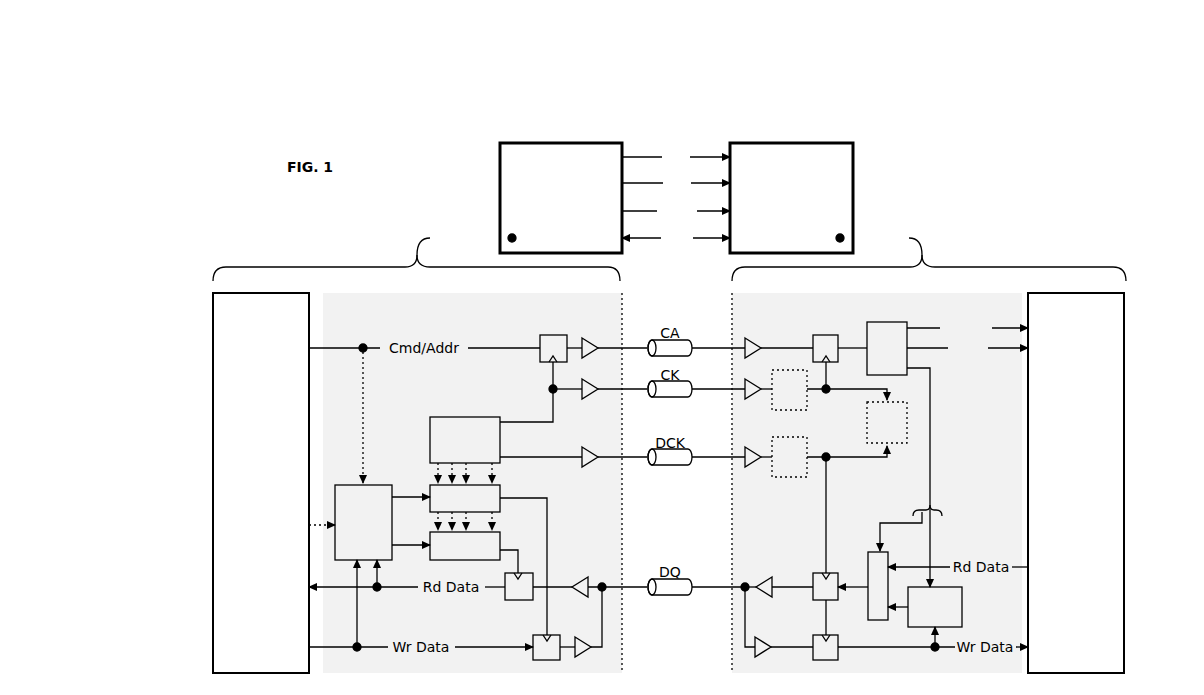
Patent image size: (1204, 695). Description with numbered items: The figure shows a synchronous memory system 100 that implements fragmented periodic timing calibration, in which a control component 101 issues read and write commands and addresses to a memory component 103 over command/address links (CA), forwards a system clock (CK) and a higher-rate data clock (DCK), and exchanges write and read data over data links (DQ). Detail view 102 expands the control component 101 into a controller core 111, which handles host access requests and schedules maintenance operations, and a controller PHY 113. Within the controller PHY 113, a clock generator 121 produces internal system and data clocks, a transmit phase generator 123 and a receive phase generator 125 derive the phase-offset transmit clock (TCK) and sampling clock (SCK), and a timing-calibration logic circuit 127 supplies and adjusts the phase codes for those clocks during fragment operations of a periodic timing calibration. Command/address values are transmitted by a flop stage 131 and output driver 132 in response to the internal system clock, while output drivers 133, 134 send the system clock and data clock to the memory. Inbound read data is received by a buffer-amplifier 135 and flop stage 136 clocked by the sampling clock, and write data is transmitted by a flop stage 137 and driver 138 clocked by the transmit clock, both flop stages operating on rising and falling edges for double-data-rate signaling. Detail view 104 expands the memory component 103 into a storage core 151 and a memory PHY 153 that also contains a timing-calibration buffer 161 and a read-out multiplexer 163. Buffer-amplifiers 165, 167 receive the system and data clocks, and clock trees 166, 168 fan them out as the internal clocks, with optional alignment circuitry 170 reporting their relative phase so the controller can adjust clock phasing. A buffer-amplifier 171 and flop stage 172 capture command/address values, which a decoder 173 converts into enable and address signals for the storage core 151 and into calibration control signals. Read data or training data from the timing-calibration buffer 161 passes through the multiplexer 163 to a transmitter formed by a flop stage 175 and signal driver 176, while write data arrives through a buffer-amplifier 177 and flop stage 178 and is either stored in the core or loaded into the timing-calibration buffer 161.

The synchronous memory system 100 is at (921, 184).
The control component 101 is at (561, 198).
The detail view 102 is at (512, 238).
The memory component 103 is at (791, 198).
The detail view 104 is at (840, 238).
The controller core 111 is at (261, 483).
The controller PHY 113 is at (472, 483).
The clock generator 121 is at (450, 417).
The transmit phase generator 123 is at (503, 510).
The receive phase generator 125 is at (433, 560).
The timing-calibration logic circuit 127 is at (383, 483).
The edge-timed flop stage 131 is at (538, 357).
The output driver 132 is at (607, 337).
The output driver 133 is at (600, 377).
The output driver 134 is at (573, 445).
The buffer-amplifier 135 is at (590, 574).
The flop stage 136 is at (505, 600).
The flop stage 137 is at (532, 660).
The driver 138 is at (576, 637).
The storage core 151 is at (1076, 483).
The memory PHY 153 is at (877, 483).
The timing-calibration buffer 161 is at (964, 612).
The read-out multiplexer 163 is at (878, 545).
The buffer-amplifier 165 is at (753, 400).
The clock tree 166 is at (804, 412).
The buffer-amplifier 167 is at (753, 468).
The clock tree 168 is at (804, 478).
The alignment circuitry 170 is at (866, 430).
The buffer-amplifier 171 is at (753, 360).
The flop stage 172 is at (811, 338).
The decoder 173 is at (865, 325).
The flop stage 175 is at (811, 600).
The signal driver 176 is at (777, 600).
The buffer-amplifier 177 is at (773, 655).
The flop stage 178 is at (840, 661).